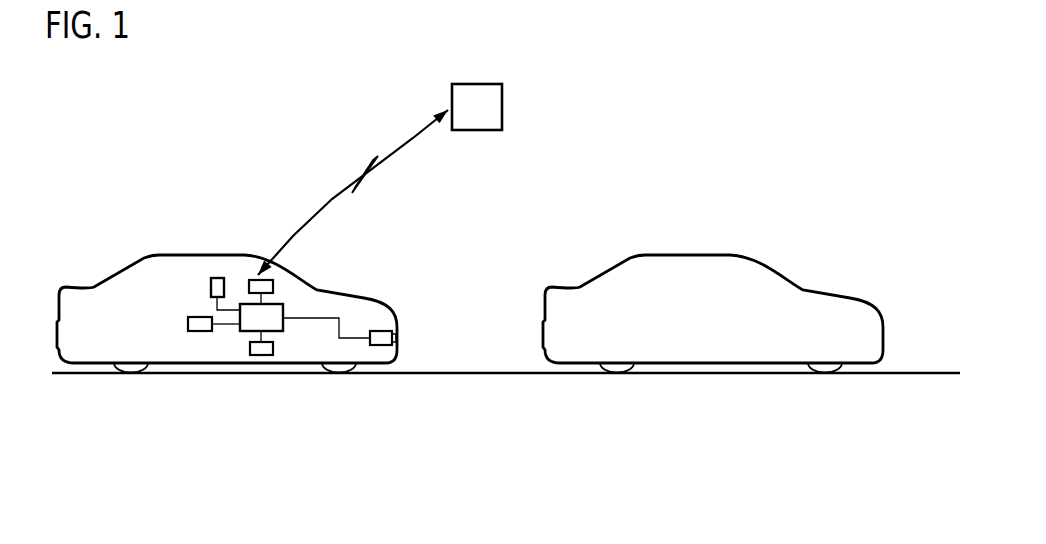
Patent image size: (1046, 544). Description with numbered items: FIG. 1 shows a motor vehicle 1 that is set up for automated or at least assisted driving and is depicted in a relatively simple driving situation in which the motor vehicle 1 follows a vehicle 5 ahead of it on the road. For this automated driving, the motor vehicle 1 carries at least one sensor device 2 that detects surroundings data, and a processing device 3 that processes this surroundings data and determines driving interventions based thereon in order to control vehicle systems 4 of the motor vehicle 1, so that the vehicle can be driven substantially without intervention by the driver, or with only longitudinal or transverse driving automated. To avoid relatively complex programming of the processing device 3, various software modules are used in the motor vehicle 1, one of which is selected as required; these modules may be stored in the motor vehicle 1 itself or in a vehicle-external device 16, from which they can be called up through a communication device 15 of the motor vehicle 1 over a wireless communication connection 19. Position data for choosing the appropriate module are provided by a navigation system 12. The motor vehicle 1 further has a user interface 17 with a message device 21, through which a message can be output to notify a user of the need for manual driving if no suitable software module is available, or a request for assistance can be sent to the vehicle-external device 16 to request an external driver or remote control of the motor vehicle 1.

The motor vehicle 1 is at (137, 267).
The sensor device 2 is at (378, 346).
The processing device 3 is at (283, 309).
The vehicle systems 4 is at (260, 356).
The vehicle 5 is at (712, 253).
The navigation system 12 is at (200, 332).
The communication device 15 is at (275, 284).
The vehicle-external device 16 is at (503, 103).
The user interface 17 is at (217, 276).
The wireless communication connection 19 is at (332, 199).
The message device 21 is at (215, 247).